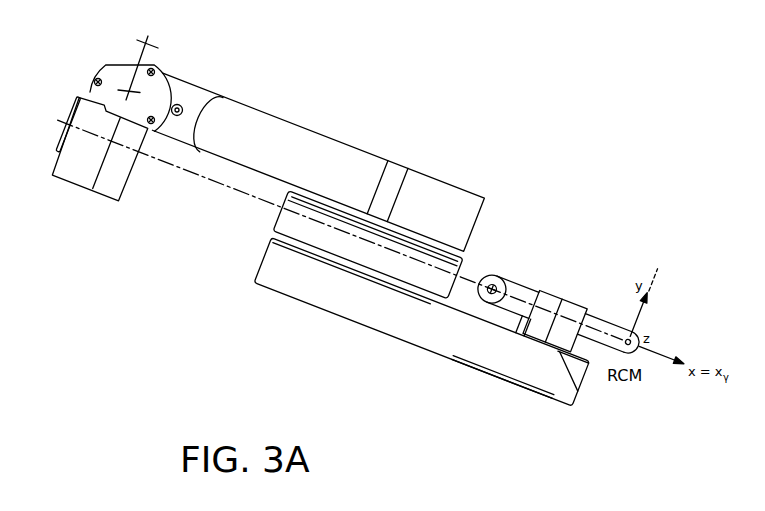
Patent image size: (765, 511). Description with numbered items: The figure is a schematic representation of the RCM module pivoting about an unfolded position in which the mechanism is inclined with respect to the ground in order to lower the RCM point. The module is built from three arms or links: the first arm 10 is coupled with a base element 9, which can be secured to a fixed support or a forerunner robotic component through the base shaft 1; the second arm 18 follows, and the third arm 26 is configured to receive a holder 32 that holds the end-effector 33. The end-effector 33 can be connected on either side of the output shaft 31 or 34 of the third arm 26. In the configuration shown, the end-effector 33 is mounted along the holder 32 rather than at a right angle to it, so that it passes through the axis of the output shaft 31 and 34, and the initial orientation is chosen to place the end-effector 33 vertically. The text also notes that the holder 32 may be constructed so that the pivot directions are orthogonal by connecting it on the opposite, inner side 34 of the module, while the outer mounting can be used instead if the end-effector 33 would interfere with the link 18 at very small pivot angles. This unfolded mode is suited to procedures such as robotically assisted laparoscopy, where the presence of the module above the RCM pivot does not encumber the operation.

The base shaft 1 is at (78, 102).
The base element 9 is at (126, 70).
The first arm 10 is at (197, 92).
The second arm 18 is at (453, 268).
The third arm 26 is at (272, 277).
The output shaft 31 is at (512, 387).
The holder 32 is at (547, 292).
The end-effector 33 is at (597, 322).
The output shaft (inner side) 34 is at (582, 393).